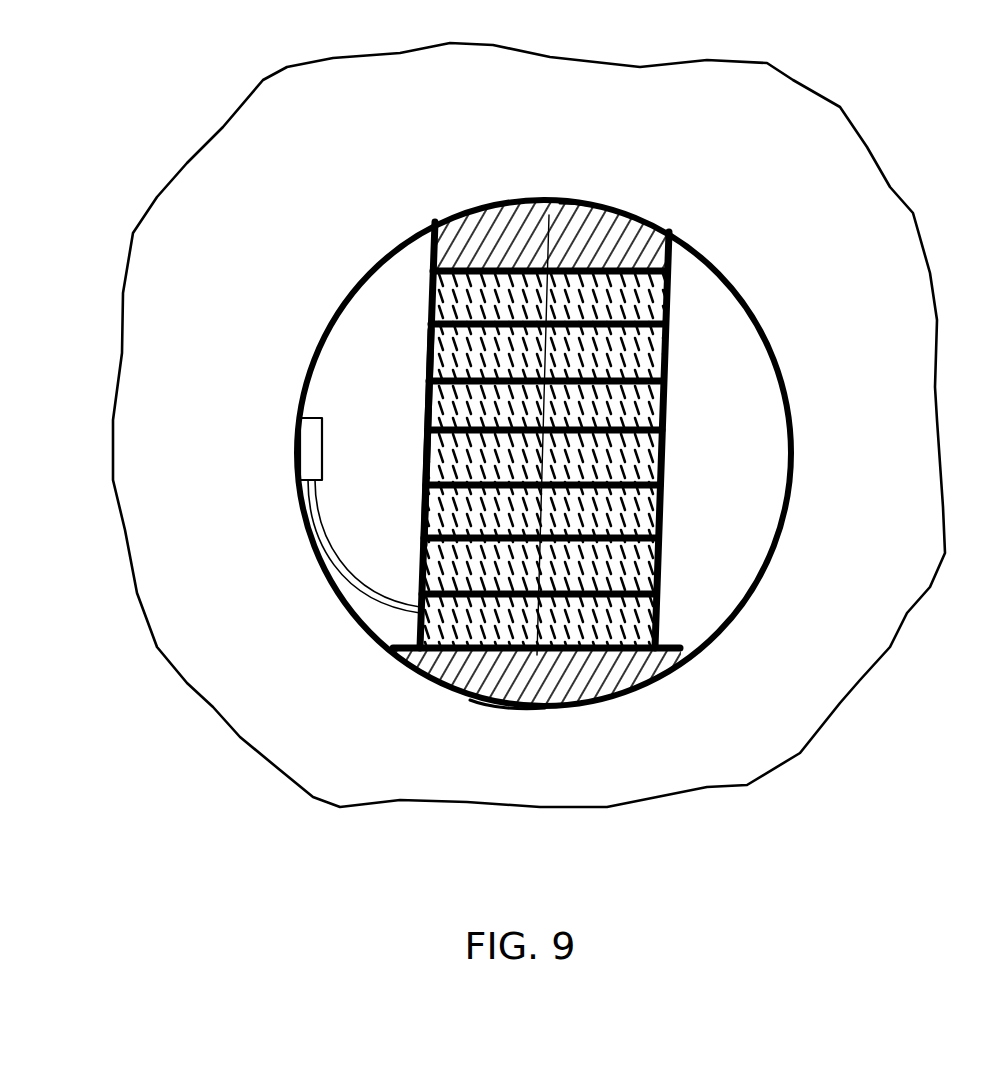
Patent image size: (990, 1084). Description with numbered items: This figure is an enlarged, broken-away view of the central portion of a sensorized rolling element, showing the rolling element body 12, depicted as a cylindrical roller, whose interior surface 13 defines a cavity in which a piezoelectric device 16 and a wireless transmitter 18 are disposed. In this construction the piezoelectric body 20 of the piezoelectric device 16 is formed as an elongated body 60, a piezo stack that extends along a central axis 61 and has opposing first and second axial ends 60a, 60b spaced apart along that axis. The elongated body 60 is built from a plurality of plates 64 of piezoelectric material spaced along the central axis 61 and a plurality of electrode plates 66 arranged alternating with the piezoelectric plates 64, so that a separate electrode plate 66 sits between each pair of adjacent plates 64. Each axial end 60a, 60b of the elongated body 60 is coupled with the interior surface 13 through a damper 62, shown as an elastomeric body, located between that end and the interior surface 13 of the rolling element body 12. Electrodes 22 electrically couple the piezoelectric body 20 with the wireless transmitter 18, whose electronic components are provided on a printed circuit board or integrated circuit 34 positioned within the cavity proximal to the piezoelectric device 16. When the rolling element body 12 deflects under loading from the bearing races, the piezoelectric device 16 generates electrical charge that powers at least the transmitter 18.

The rolling element body 12 is at (880, 229).
The interior surface 13 is at (772, 358).
The piezoelectric device 16 is at (392, 277).
The wireless transmitter 18 is at (296, 428).
The piezoelectric body 20 is at (410, 310).
The electrodes 22 is at (418, 377).
The printed circuit board or integrated circuit 34 is at (322, 471).
The elongated body 60 is at (684, 301).
The first axial end 60a is at (540, 213).
The second axial end 60b is at (501, 707).
The central axis 61 is at (596, 206).
The damper 62 is at (637, 241).
The piezoelectric plates 64 is at (641, 357).
The electrode plates 66 is at (462, 324).